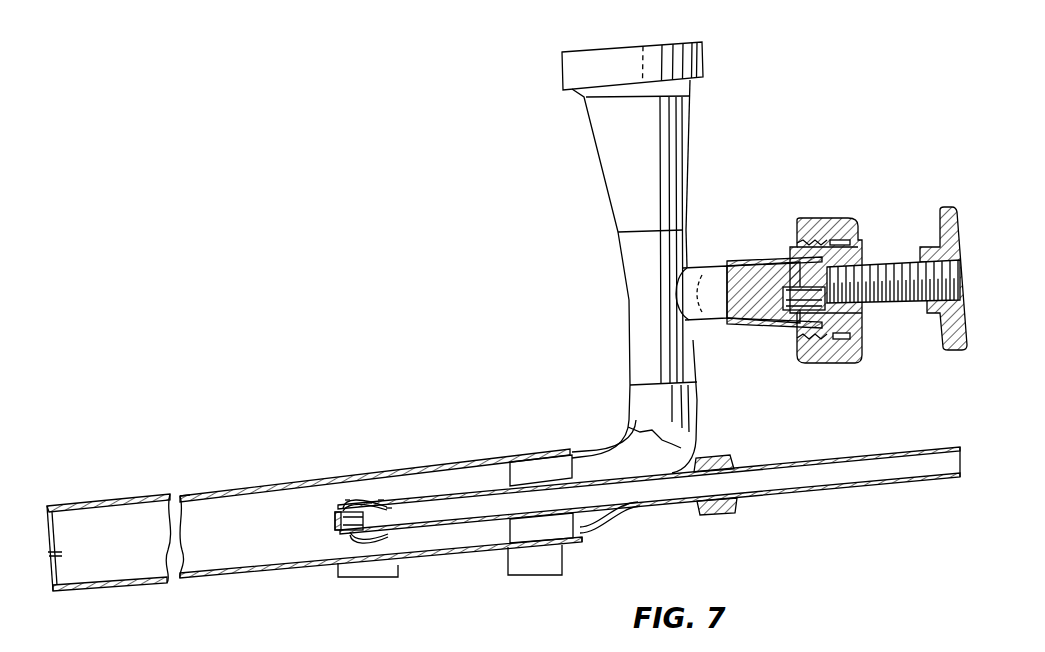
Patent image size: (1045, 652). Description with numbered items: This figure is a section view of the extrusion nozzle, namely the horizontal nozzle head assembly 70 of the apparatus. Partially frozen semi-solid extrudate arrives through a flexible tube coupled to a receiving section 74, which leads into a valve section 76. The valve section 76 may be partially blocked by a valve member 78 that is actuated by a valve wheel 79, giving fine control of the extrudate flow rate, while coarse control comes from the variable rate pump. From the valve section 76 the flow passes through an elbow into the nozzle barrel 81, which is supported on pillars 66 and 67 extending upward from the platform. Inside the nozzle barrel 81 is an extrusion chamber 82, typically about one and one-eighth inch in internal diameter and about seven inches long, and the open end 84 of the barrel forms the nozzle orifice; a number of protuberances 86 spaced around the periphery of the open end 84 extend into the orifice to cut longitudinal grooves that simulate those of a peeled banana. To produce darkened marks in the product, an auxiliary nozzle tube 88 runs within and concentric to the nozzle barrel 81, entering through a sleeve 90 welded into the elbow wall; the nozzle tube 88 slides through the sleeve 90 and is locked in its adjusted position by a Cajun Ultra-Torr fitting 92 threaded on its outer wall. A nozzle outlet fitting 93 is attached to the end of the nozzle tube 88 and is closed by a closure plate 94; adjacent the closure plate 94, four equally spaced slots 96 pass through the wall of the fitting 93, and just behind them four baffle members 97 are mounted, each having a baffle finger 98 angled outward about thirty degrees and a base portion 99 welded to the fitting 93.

The horizontal nozzle head assembly 70 is at (553, 331).
The receiving section 74 is at (673, 123).
The valve section 76 is at (622, 274).
The valve member 78 is at (748, 288).
The valve wheel 79 is at (880, 267).
The nozzle barrel 81 is at (208, 492).
The extrusion chamber 82 is at (230, 506).
The open end 84 is at (52, 592).
The protuberances 86 is at (58, 585).
The auxiliary nozzle tube 88 is at (507, 488).
The sleeve 90 is at (665, 504).
The Cajun Ultra-Torr fitting 92 is at (723, 456).
The nozzle outlet fitting 93 is at (388, 508).
The closure plate 94 is at (333, 528).
The slots 96 is at (338, 500).
The baffle members 97 is at (368, 503).
The baffle finger 98 is at (347, 500).
The base portion 99 is at (380, 500).
The pillar 67 is at (390, 566).
The pillar 66 is at (562, 568).